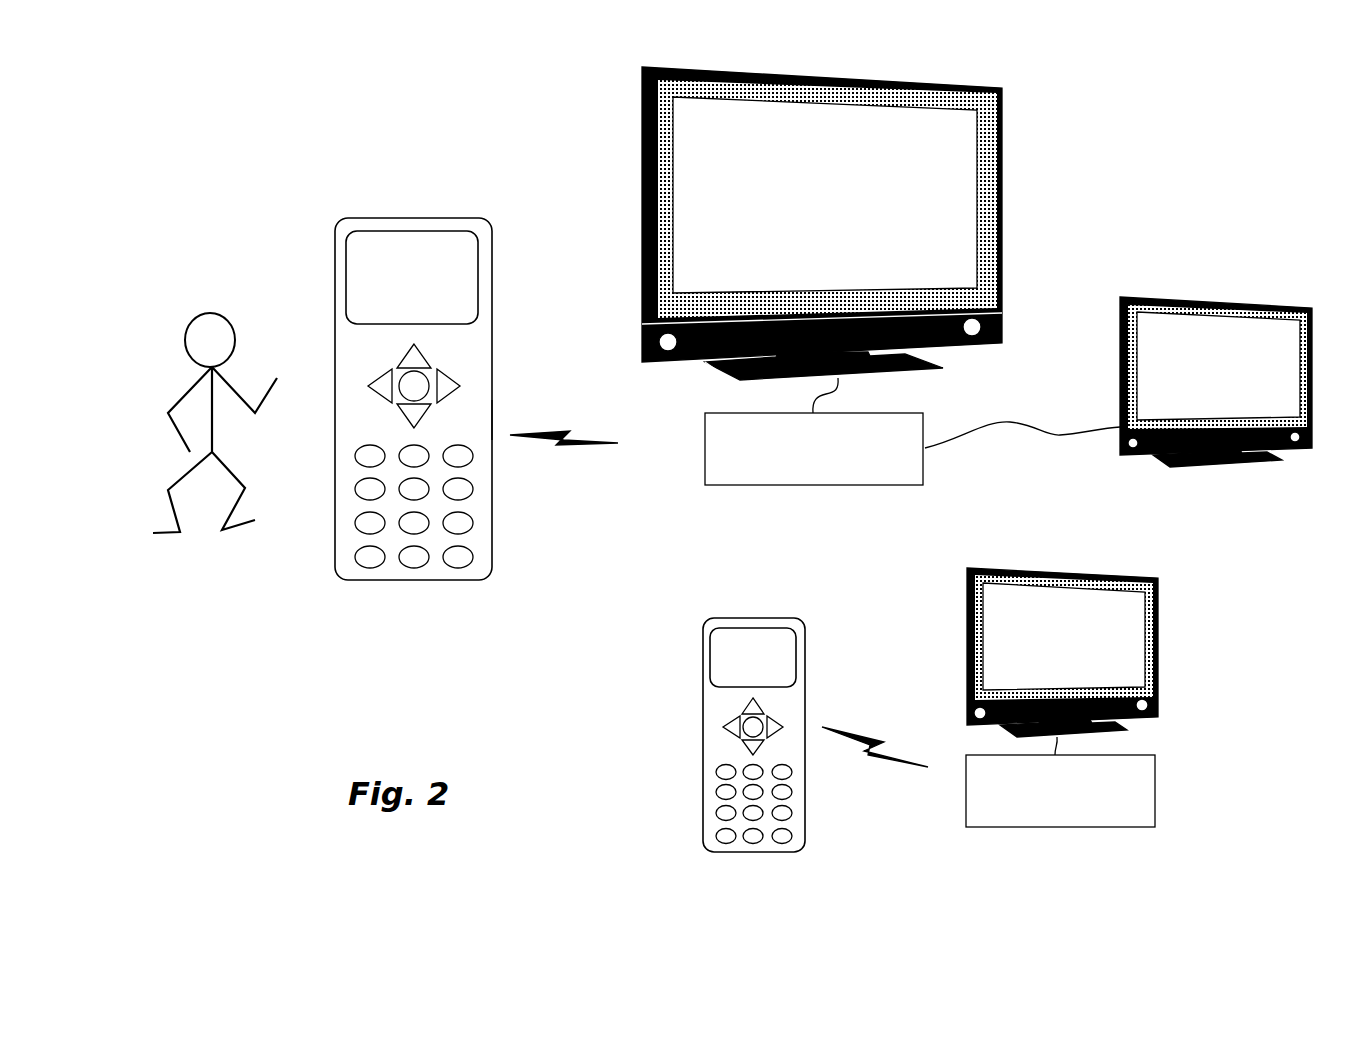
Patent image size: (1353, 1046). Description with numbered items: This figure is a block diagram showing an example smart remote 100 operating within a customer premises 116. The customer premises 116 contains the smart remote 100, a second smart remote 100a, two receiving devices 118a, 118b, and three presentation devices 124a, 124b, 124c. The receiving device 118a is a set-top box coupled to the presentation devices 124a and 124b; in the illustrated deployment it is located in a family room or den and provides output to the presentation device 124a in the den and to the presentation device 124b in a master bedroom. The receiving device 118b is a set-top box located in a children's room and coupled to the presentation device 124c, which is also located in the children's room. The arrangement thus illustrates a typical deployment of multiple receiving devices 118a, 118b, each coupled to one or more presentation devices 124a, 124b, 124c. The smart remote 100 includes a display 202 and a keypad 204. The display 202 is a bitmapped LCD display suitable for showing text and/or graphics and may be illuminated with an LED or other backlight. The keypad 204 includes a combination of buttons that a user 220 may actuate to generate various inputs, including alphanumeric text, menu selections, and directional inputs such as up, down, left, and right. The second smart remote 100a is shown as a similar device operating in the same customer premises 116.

The smart remote 100 is at (457, 376).
The second smart remote 100a is at (800, 623).
The display 202 is at (481, 267).
The keypad 204 is at (467, 427).
The user 220 is at (218, 312).
The customer premises 116 is at (1193, 143).
The presentation device 124a is at (822, 223).
The presentation device 124b is at (1216, 382).
The presentation device 124c is at (1062, 652).
The receiving device 118a is at (925, 433).
The receiving device 118b is at (1152, 775).